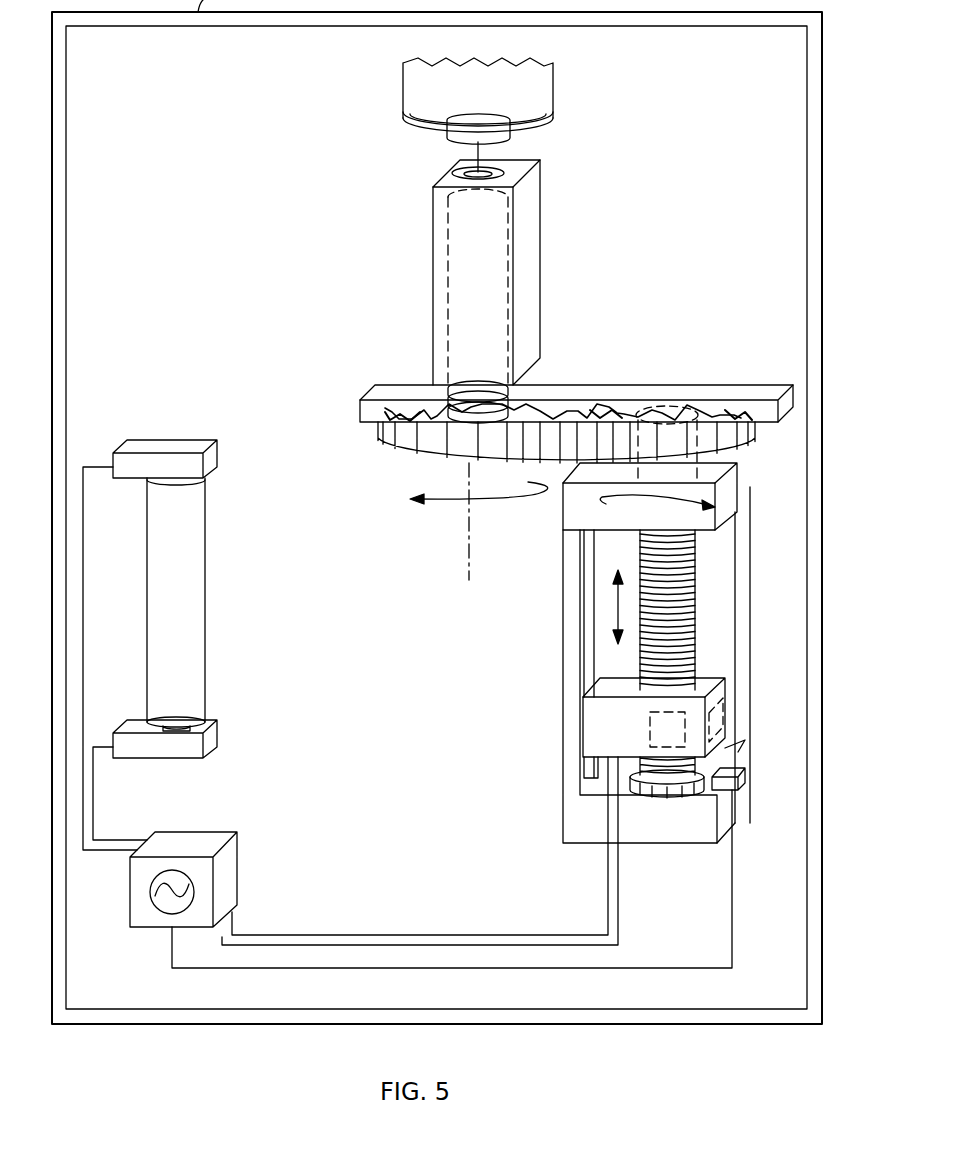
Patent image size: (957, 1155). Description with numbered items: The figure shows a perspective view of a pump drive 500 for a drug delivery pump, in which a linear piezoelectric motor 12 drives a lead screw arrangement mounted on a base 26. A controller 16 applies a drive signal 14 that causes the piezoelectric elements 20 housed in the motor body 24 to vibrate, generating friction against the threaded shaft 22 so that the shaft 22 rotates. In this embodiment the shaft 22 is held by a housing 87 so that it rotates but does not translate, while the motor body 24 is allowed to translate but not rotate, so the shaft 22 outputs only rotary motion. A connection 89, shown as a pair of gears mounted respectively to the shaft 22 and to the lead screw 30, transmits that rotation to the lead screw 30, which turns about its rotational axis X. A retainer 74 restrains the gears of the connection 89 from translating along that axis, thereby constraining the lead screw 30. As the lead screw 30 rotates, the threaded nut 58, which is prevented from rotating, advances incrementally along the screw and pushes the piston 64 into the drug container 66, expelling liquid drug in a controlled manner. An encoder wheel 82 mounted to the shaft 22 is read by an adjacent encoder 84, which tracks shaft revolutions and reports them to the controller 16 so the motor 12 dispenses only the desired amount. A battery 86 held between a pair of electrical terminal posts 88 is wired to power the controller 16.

The pump drive 500 is at (185, 112).
The base 26 is at (112, 1001).
The drug cartridge or container 66 is at (553, 90).
The plunger or piston 64 is at (447, 135).
The threaded nut 58 is at (540, 246).
The lead screw 30 is at (508, 328).
The retainer 74 is at (753, 392).
The connection 89 is at (733, 447).
The threaded rod or shaft 22 is at (697, 611).
The piezoelectric elements 20 is at (655, 733).
The motor body 24 is at (590, 741).
The motor 12 is at (722, 745).
The housing 87 is at (565, 820).
The encoder wheel 82 is at (673, 800).
The encoder 84 is at (740, 792).
The electrical terminal posts 88 is at (167, 440).
The battery 86 is at (190, 615).
The controller 16 is at (237, 864).
The drive signal 14 is at (158, 899).